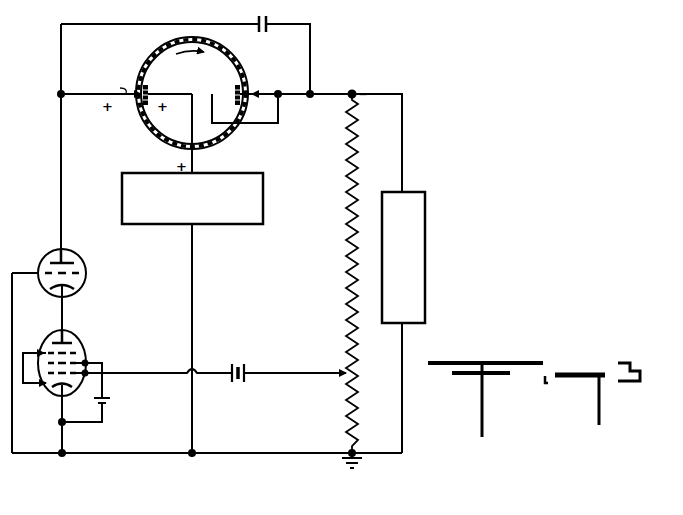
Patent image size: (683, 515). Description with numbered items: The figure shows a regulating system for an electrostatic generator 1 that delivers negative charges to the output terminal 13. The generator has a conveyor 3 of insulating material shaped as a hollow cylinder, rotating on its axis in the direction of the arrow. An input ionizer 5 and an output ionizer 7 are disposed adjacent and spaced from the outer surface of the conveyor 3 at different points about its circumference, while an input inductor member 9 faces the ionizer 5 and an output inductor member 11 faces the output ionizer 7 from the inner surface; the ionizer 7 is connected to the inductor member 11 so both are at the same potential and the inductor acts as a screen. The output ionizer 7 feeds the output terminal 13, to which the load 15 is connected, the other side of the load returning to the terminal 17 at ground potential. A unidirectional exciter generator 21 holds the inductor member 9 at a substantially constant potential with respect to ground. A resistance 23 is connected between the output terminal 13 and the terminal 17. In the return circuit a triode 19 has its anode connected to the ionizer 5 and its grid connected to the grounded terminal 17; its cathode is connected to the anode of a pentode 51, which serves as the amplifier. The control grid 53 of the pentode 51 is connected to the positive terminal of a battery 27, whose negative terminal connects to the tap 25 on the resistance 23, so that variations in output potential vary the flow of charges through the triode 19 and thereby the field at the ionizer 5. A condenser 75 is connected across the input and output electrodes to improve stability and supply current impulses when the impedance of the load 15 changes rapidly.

The electrostatic generator 1 is at (238, 56).
The conveyor 3 is at (243, 79).
The input ionizer 5 is at (116, 84).
The output ionizer 7 is at (258, 88).
The input inductor member 9 is at (150, 89).
The output inductor member 11 is at (235, 89).
The output terminal 13 is at (351, 91).
The load 15 is at (420, 192).
The grounded terminal 17 is at (350, 452).
The triode 19 is at (56, 249).
The exciter generator 21 is at (136, 173).
The resistance 23 is at (348, 156).
The tap 25 is at (346, 370).
The battery 27 is at (239, 382).
The pentode 51 is at (81, 336).
The control grid 53 is at (56, 386).
The condenser 75 is at (258, 21).